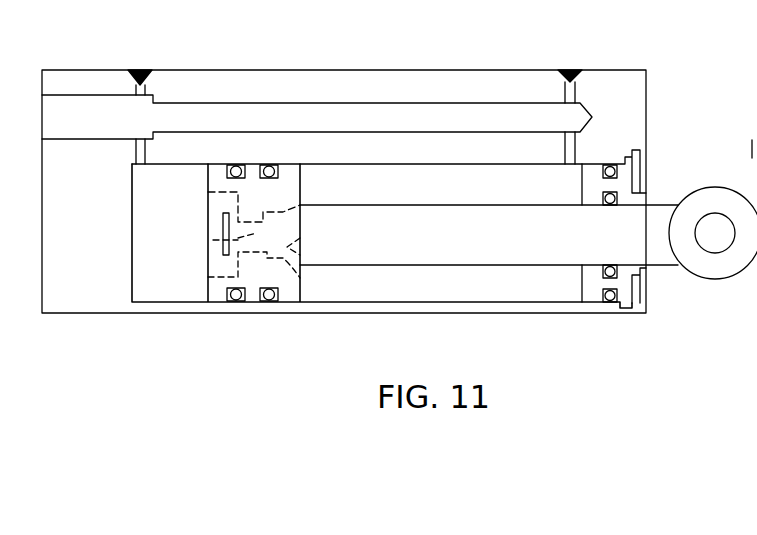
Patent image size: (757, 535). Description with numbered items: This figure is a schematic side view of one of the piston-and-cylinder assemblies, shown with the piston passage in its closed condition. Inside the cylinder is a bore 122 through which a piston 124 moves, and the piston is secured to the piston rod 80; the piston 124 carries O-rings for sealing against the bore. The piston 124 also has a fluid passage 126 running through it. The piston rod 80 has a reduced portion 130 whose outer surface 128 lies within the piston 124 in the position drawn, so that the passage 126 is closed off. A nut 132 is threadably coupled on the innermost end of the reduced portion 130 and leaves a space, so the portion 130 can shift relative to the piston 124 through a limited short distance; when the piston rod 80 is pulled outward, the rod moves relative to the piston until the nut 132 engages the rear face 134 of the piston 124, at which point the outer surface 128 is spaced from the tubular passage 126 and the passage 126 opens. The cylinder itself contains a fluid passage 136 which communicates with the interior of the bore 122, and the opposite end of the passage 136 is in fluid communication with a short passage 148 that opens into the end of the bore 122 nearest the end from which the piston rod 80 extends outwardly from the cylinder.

The piston rod 80 is at (492, 215).
The bore 122 is at (387, 166).
The piston 124 is at (271, 164).
The fluid passage 126 is at (284, 260).
The outer surface 128 is at (290, 247).
The reduced portion 130 is at (224, 243).
The nut 132 is at (222, 219).
The rear face 134 is at (232, 202).
The fluid passage 136 is at (487, 115).
The short passage 148 is at (576, 152).